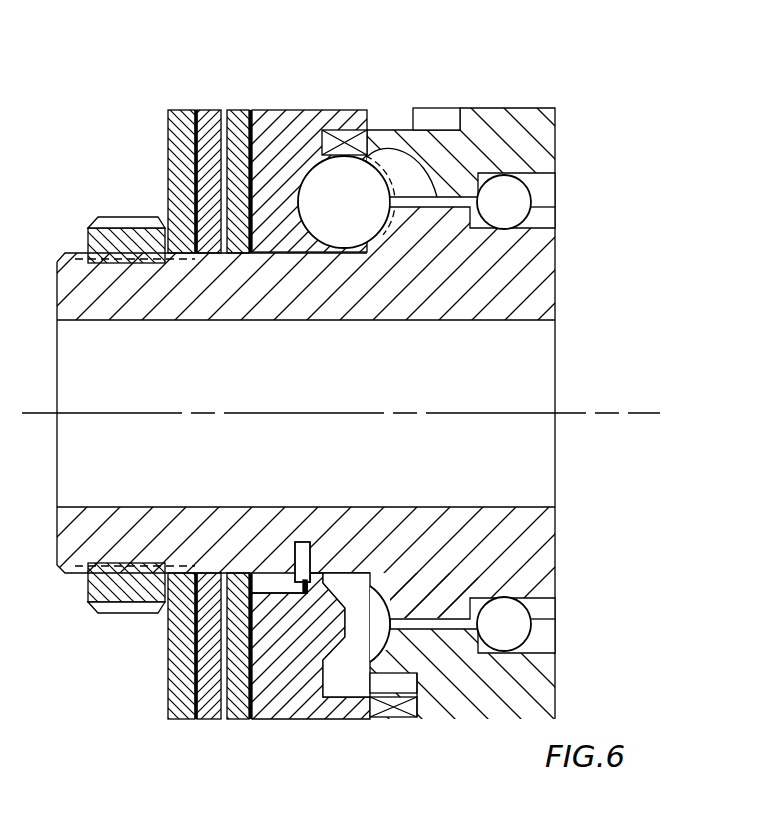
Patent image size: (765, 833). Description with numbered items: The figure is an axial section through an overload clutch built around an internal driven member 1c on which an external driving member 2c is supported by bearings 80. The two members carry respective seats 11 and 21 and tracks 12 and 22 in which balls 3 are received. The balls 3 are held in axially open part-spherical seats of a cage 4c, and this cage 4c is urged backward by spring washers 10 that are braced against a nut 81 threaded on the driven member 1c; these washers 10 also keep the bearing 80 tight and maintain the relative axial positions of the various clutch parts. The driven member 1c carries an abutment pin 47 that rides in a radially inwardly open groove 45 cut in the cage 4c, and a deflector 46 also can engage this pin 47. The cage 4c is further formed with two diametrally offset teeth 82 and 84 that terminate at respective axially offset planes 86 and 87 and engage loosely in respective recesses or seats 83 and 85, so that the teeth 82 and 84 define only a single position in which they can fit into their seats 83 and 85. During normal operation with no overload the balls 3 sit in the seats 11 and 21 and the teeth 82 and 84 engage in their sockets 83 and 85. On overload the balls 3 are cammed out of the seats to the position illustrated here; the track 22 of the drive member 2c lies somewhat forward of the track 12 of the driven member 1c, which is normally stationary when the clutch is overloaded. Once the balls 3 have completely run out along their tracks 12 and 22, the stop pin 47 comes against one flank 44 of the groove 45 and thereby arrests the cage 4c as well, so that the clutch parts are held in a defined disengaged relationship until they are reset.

The internal driven member 1c is at (510, 273).
The external driving member 2c is at (555, 108).
The balls 3 is at (300, 133).
The cage 4c is at (270, 118).
The washers 10 is at (217, 109).
The seat 11 is at (402, 213).
The track 12 is at (345, 608).
The seat 21 is at (412, 182).
The track 22 is at (390, 582).
The flank 44 is at (285, 585).
The groove 45 is at (262, 572).
The deflector 46 is at (355, 572).
The abutment pin 47 is at (302, 557).
The bearings 80 is at (507, 201).
The nut 81 is at (110, 235).
The tooth 82 is at (333, 185).
The seat 83 is at (383, 710).
The tooth 84 is at (400, 682).
The seat 85 is at (432, 117).
The plane 86 is at (367, 108).
The plane 87 is at (417, 765).